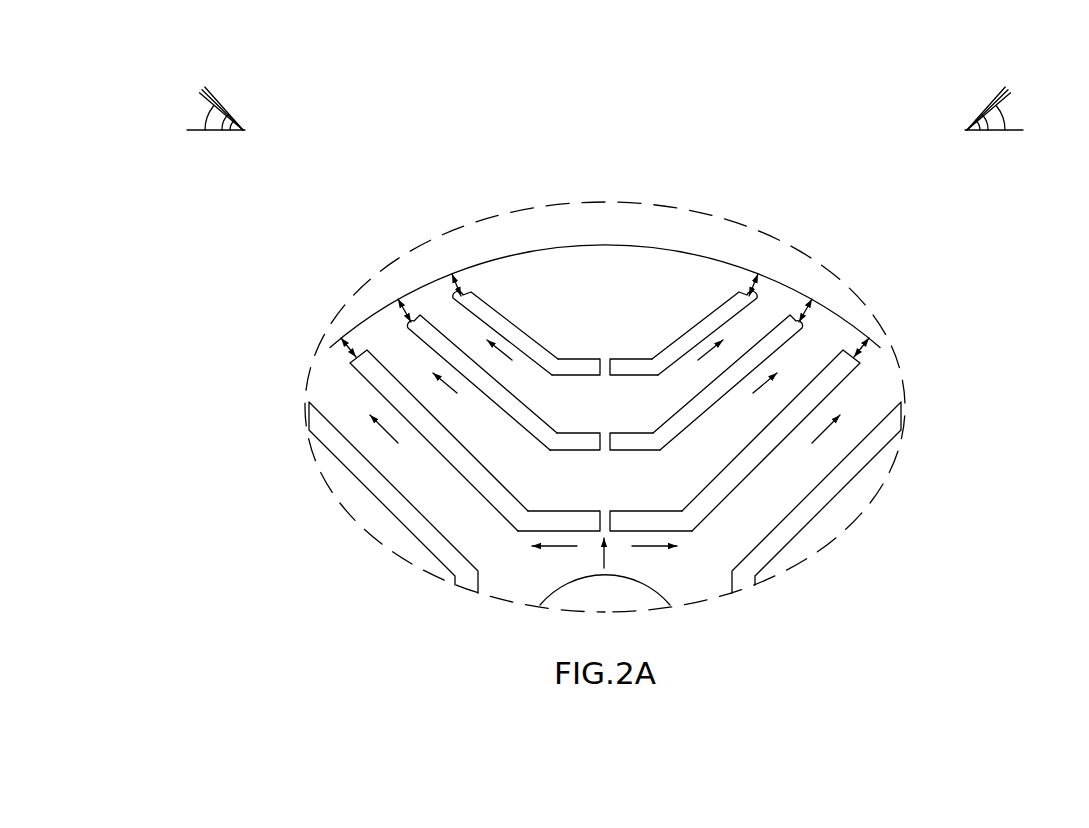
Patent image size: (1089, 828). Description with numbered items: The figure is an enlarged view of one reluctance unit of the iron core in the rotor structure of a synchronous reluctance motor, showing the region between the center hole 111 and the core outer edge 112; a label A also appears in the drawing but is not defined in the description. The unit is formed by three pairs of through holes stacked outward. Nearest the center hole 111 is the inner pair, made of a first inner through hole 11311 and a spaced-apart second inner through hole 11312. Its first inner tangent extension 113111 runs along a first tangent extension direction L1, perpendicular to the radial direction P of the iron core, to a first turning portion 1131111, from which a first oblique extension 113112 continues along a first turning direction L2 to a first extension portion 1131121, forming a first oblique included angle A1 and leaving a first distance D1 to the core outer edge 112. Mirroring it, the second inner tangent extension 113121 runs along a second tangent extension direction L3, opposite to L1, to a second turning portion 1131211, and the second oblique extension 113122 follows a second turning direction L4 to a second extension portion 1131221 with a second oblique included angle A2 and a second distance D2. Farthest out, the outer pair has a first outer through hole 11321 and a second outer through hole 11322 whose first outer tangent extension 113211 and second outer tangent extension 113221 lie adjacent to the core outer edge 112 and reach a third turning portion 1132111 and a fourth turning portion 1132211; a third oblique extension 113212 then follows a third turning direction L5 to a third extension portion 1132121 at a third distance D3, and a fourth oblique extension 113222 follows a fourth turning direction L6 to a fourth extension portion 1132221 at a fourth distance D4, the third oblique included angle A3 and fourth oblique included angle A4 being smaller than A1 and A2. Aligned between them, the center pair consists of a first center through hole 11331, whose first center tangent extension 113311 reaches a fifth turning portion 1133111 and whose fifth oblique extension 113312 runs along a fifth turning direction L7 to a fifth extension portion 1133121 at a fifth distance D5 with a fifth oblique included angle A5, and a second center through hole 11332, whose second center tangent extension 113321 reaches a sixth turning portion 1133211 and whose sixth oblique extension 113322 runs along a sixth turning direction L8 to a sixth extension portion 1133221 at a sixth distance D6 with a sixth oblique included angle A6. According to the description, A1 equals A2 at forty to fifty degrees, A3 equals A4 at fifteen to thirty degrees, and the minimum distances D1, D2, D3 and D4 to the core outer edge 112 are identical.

The center hole 111 is at (604, 600).
The core outer edge 112 is at (882, 350).
The region A is at (343, 341).
The first inner through hole 11311 is at (814, 519).
The first inner tangent extension 113111 is at (741, 590).
The first turning portion 1131111 is at (708, 511).
The first oblique extension 113112 is at (778, 550).
The first extension portion 1131121 is at (840, 392).
The second inner through hole 11312 is at (412, 519).
The second inner tangent extension 113121 is at (470, 509).
The second turning portion 1131211 is at (502, 512).
The second oblique extension 113122 is at (351, 515).
The second extension portion 1131221 is at (370, 390).
The first outer through hole 11321 is at (753, 212).
The first outer tangent extension 113211 is at (630, 364).
The third oblique extension 113212 is at (780, 234).
The third turning portion 1132111 is at (780, 247).
The third extension portion 1132121 is at (759, 296).
The second outer through hole 11322 is at (457, 232).
The second outer tangent extension 113221 is at (525, 238).
The fourth turning portion 1132211 is at (500, 330).
The fourth oblique extension 113222 is at (428, 256).
The fourth extension portion 1132221 is at (451, 296).
The first center through hole 11331 is at (788, 426).
The first center tangent extension 113311 is at (640, 451).
The fifth oblique extension 113312 is at (810, 404).
The fifth turning portion 1133111 is at (795, 327).
The fifth extension portion 1133121 is at (806, 330).
The second center through hole 11332 is at (419, 426).
The second center tangent extension 113321 is at (570, 451).
The sixth oblique extension 113322 is at (398, 404).
The sixth turning portion 1133211 is at (421, 314).
The sixth extension portion 1133221 is at (408, 327).
The first distance D1 is at (875, 348).
The second distance D2 is at (335, 348).
The third distance D3 is at (755, 279).
The fourth distance D4 is at (455, 279).
The fifth distance D5 is at (811, 304).
The sixth distance D6 is at (399, 304).
The first tangent extension direction L1 is at (969, 132).
The first turning direction L2 is at (823, 433).
The second tangent extension direction L3 is at (241, 132).
The second turning direction L4 is at (387, 433).
The third turning direction L5 is at (706, 348).
The fourth turning direction L6 is at (505, 350).
The fifth turning direction L7 is at (754, 392).
The sixth turning direction L8 is at (456, 392).
The radial direction P is at (611, 553).
The first oblique included angle A1 is at (978, 132).
The second oblique included angle A2 is at (232, 132).
The third oblique included angle A3 is at (988, 116).
The fourth oblique included angle A4 is at (222, 116).
The fifth oblique included angle A5 is at (1005, 126).
The sixth oblique included angle A6 is at (205, 126).